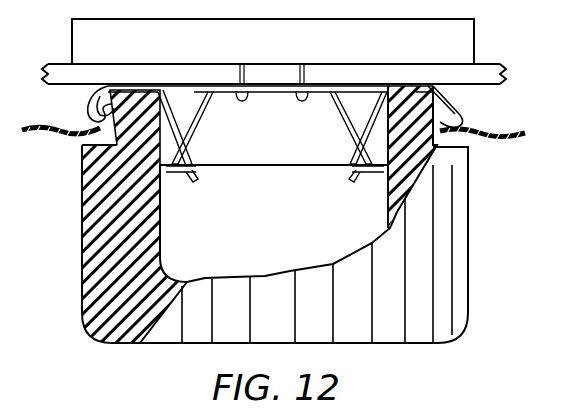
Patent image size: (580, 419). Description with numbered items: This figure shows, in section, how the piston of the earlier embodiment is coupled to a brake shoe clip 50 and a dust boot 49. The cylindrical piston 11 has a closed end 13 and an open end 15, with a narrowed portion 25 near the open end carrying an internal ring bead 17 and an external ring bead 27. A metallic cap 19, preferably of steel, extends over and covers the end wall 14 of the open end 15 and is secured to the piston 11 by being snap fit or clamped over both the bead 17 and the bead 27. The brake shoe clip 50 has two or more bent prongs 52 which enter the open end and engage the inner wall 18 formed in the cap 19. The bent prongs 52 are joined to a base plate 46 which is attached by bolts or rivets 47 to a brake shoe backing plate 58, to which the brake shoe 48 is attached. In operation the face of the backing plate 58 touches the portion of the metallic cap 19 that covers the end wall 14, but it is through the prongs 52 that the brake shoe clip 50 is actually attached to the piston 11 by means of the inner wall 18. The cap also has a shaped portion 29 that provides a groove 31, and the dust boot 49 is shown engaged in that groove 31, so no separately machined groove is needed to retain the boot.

The piston 11 is at (466, 240).
The closed end 13 is at (288, 340).
The end wall 14 is at (408, 92).
The open end 15 is at (267, 244).
The internal ring bead 17 is at (164, 160).
The inner wall 18 is at (352, 152).
The metallic cap 19 is at (372, 115).
The narrowed portion 25 is at (122, 87).
The external ring bead 27 is at (92, 110).
The shaped portion 29 is at (463, 108).
The groove 31 is at (93, 165).
The base plate 46 is at (286, 96).
The bolts or rivets 47 is at (237, 105).
The brake shoe 48 is at (475, 40).
The dust boot 49 is at (512, 138).
The brake shoe clip 50 is at (272, 100).
The bent prongs 52 is at (352, 172).
The brake shoe backing plate 58 is at (490, 70).